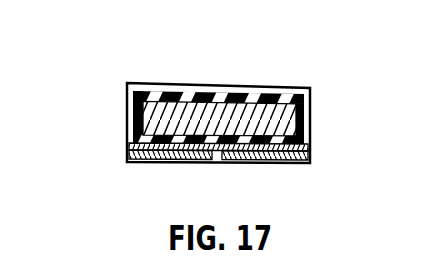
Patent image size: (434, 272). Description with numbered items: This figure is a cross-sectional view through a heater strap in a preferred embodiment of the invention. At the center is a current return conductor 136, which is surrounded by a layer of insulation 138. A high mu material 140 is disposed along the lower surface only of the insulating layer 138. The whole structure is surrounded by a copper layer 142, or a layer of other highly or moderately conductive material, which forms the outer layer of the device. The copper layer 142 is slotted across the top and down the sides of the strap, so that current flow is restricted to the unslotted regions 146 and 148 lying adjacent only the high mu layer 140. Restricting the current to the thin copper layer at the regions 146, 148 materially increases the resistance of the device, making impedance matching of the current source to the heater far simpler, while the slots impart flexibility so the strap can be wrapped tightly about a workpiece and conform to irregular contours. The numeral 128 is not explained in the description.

The inner conductive shell 128 is at (137, 97).
The current return conductor 136 is at (142, 117).
The layer of insulation 138 is at (294, 135).
The high mu material 140 is at (293, 157).
The copper layer 142 is at (313, 98).
The unslotted region 146 is at (140, 163).
The unslotted region 148 is at (252, 163).